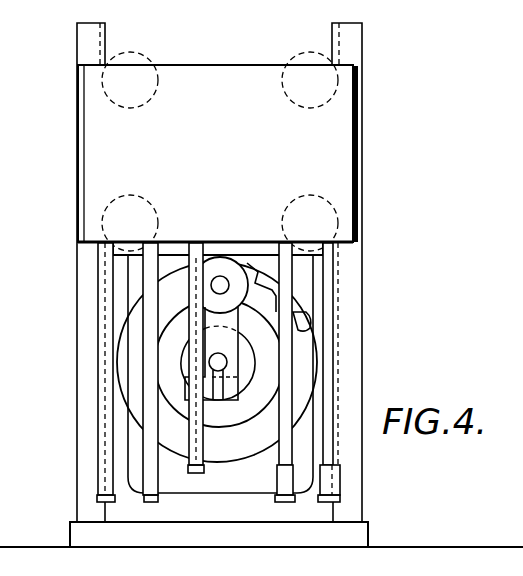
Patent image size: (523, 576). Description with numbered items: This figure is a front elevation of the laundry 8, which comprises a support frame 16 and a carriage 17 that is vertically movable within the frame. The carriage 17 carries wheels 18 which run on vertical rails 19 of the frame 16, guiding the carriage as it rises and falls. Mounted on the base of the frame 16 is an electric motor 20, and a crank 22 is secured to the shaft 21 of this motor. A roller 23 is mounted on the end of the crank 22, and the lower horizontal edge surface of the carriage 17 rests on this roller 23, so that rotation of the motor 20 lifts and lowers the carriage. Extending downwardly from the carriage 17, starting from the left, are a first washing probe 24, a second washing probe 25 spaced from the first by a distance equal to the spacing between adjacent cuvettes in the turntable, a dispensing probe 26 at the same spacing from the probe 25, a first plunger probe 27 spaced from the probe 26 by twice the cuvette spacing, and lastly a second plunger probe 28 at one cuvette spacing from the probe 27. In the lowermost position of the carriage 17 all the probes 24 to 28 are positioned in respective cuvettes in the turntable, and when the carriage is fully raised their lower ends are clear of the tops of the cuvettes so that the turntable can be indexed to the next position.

The laundry 8 is at (368, 193).
The support frame 16 is at (257, 532).
The carriage 17 is at (253, 77).
The wheels 18 is at (155, 91).
The vertical rails 19 is at (88, 365).
The electric motor 20 is at (225, 483).
The shaft 21 is at (227, 361).
The crank 22 is at (237, 321).
The roller 23 is at (219, 258).
The first washing probe 24 is at (100, 473).
The second washing probe 25 is at (150, 502).
The dispensing probe 26 is at (196, 473).
The first plunger probe 27 is at (283, 502).
The second plunger probe 28 is at (330, 478).